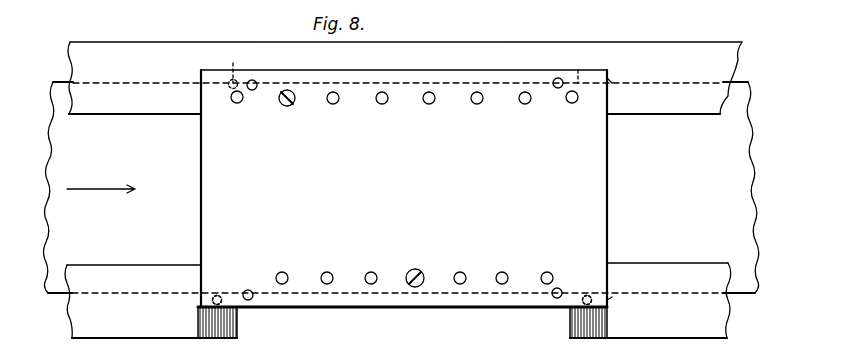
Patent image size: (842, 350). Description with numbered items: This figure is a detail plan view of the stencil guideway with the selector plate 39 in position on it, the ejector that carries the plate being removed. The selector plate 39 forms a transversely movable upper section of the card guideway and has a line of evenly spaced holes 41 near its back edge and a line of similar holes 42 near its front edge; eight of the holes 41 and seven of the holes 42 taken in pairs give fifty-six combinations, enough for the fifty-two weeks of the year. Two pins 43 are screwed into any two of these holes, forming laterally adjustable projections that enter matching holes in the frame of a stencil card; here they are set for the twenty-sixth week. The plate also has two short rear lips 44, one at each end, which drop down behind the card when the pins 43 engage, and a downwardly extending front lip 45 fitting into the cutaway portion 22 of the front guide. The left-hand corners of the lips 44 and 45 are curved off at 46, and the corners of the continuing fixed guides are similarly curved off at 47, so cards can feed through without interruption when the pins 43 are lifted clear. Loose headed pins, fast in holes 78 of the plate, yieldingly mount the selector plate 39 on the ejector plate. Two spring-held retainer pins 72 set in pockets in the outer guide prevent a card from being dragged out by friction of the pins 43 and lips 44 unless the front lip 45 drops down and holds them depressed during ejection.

The cutaway portion 22 is at (543, 313).
The selector plate 39 is at (588, 196).
The holes 41 is at (476, 104).
The holes 42 is at (542, 272).
The pins 43 is at (290, 106).
The rear lips 44 is at (209, 81).
The front lip 45 is at (377, 294).
The curved corners 46 is at (234, 63).
The curved corners 47 is at (234, 96).
The retainer pins 72 is at (222, 302).
The holes 78 is at (253, 90).